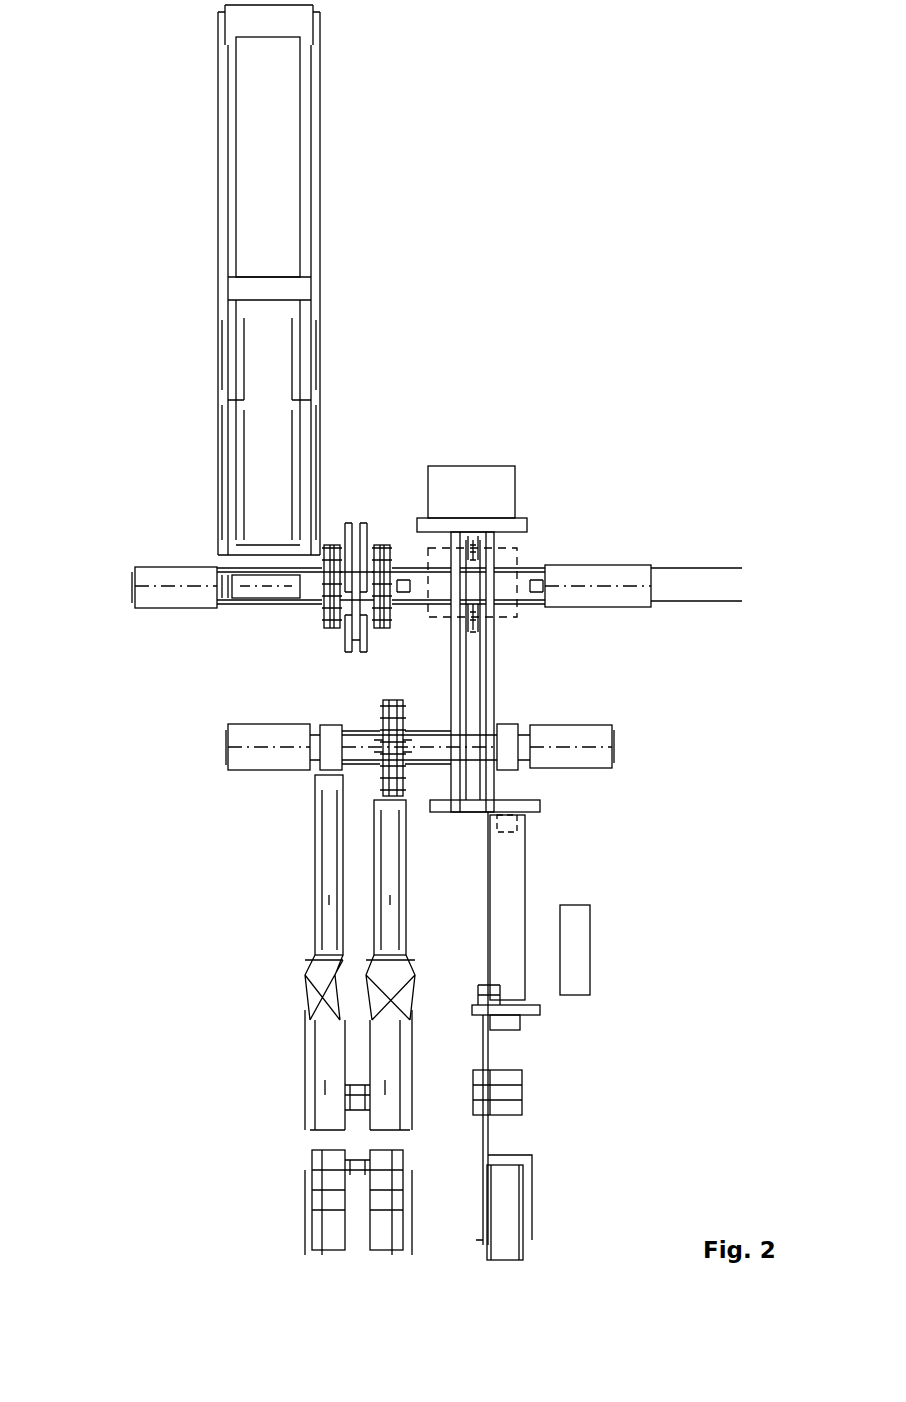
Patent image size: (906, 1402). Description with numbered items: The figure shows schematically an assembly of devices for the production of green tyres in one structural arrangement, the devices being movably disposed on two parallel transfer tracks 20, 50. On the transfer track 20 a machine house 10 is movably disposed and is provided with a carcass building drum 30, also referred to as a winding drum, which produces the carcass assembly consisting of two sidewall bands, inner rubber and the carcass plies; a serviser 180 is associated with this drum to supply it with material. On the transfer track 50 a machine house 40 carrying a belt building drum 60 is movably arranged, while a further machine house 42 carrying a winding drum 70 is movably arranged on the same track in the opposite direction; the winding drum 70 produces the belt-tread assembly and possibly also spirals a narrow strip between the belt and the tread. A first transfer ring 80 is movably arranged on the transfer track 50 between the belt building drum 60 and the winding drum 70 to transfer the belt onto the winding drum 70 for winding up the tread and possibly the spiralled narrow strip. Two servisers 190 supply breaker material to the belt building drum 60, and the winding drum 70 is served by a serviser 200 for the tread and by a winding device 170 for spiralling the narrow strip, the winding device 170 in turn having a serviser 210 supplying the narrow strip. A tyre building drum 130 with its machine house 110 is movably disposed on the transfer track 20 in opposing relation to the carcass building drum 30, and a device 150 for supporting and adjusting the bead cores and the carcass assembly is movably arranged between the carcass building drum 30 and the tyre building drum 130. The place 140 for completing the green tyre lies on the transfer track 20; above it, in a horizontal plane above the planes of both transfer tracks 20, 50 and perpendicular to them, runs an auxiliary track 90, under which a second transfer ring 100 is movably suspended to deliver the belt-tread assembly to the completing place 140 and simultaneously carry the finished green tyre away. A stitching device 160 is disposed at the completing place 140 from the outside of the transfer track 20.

The machine house 10 is at (158, 560).
The transfer track 20 is at (292, 556).
The carcass building drum 30 is at (262, 583).
The machine house 40 is at (222, 772).
The machine house 42 is at (618, 749).
The transfer track 50 is at (434, 773).
The belt building drum 60 is at (330, 722).
The winding drum 70 is at (513, 772).
The first transfer ring 80 is at (378, 765).
The auxiliary track 90 is at (490, 682).
The second transfer ring 100 is at (492, 633).
The machine house 110 is at (602, 561).
The tyre building drum 130 is at (530, 563).
The place for completing the green tyre 140 is at (520, 560).
The device for supporting and adjusting the bead cores and the carcass assembly 150 is at (383, 532).
The stitching device 160 is at (470, 464).
The winding device 170 is at (507, 836).
The serviser 180 is at (323, 235).
The servisers 190 is at (372, 1130).
The serviser 200 is at (537, 1185).
The serviser 210 is at (590, 982).